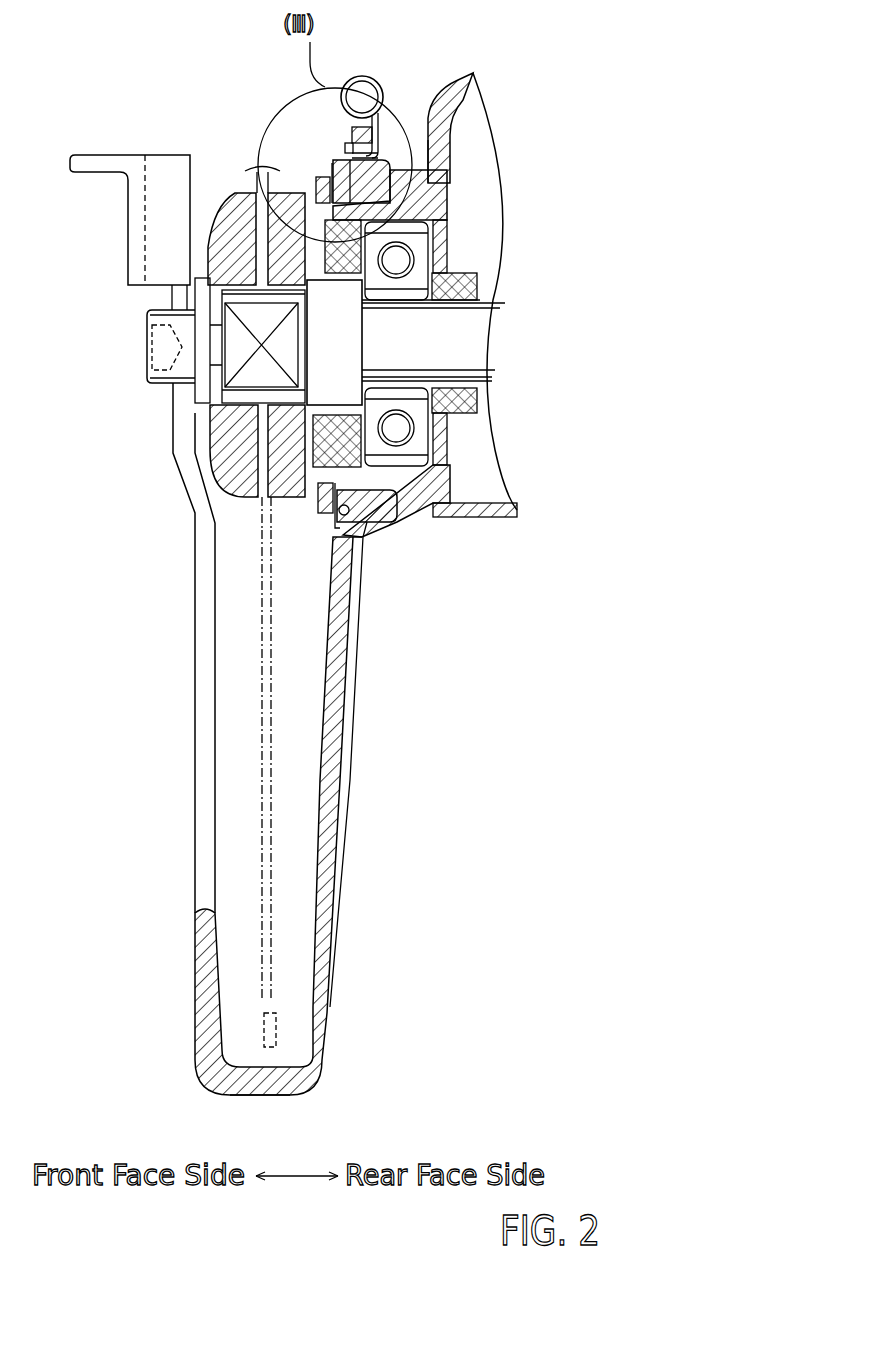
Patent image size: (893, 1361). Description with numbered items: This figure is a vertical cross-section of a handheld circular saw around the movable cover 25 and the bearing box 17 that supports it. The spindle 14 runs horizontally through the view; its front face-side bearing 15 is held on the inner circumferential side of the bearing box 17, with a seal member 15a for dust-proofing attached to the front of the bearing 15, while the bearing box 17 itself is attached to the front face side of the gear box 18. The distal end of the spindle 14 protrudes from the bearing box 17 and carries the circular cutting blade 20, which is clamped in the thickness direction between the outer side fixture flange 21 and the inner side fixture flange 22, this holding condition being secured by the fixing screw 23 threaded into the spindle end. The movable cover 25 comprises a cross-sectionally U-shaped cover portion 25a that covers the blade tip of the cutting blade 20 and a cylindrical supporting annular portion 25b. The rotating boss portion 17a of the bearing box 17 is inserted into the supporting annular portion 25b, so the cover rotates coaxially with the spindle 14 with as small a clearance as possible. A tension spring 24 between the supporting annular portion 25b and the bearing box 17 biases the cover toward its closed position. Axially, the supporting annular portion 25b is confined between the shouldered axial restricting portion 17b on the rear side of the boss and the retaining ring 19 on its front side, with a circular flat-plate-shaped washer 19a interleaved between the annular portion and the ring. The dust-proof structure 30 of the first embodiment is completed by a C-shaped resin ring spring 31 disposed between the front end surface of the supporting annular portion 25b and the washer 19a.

The spindle 14 is at (450, 343).
The bearing 15 is at (400, 430).
The seal member 15a is at (400, 257).
The bearing box 17 is at (408, 497).
The rotating boss portion 17a is at (395, 190).
The axial restricting portion 17b is at (423, 170).
The gear box 18 is at (468, 73).
The retaining ring 19 is at (320, 230).
The washer 19a is at (333, 177).
The cutting blade 20 is at (265, 677).
The outer side fixture flange 21 is at (227, 228).
The inner side fixture flange 22 is at (267, 513).
The fixing screw 23 is at (150, 347).
The tension spring 24 is at (365, 76).
The movable cover 25 is at (330, 1013).
The cover portion 25a is at (253, 1090).
The supporting annular portion 25b is at (428, 147).
The dust-proof structure 30 is at (253, 150).
The ring spring 31 is at (393, 127).